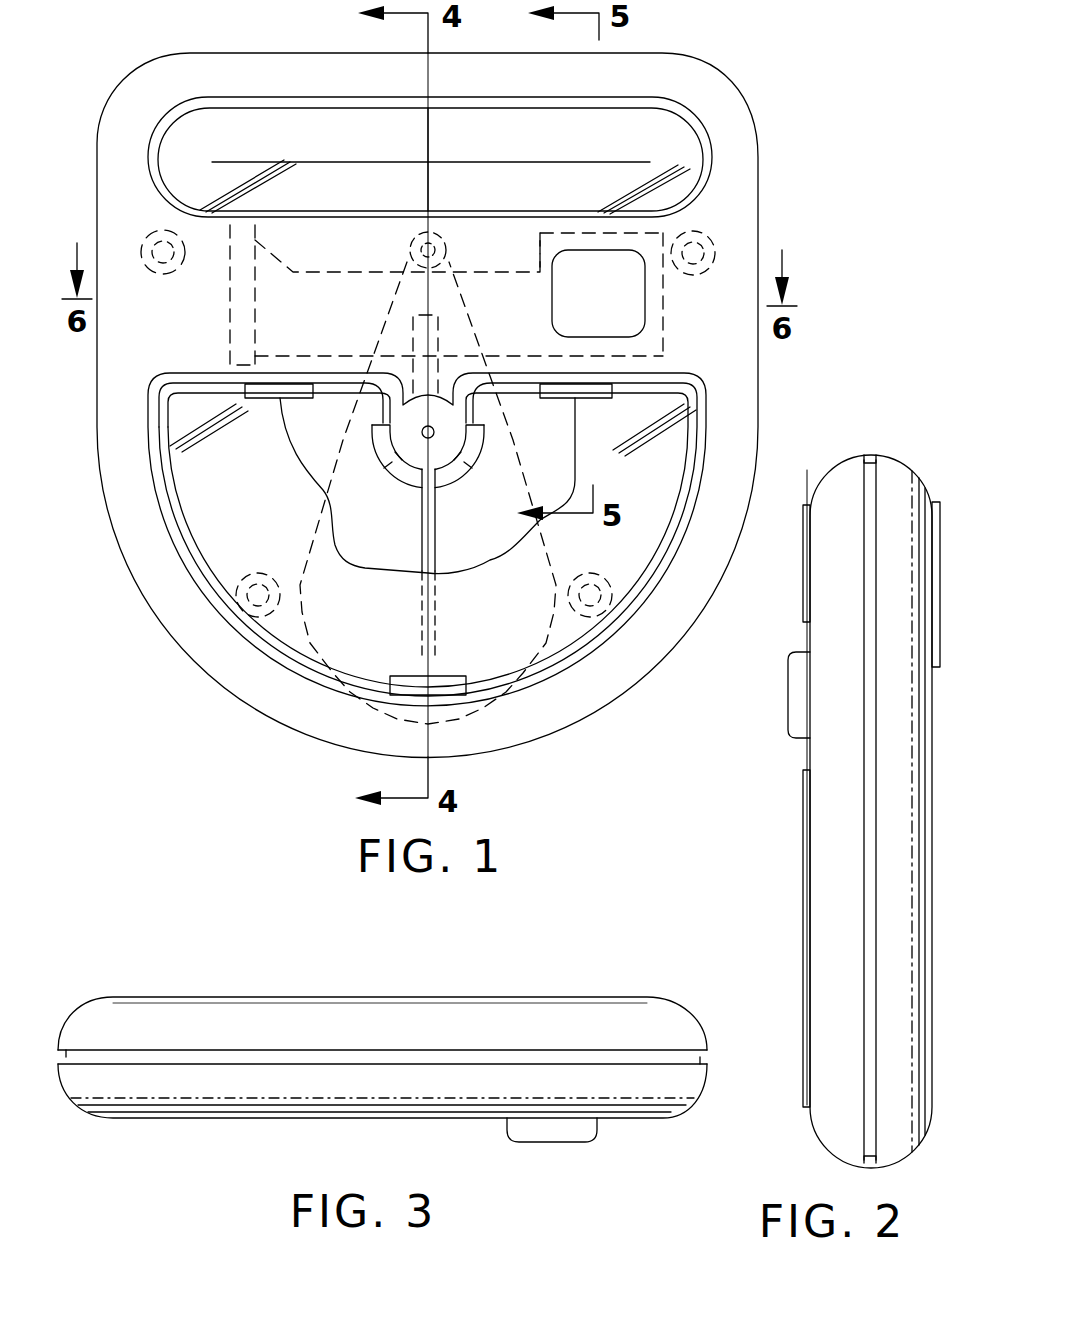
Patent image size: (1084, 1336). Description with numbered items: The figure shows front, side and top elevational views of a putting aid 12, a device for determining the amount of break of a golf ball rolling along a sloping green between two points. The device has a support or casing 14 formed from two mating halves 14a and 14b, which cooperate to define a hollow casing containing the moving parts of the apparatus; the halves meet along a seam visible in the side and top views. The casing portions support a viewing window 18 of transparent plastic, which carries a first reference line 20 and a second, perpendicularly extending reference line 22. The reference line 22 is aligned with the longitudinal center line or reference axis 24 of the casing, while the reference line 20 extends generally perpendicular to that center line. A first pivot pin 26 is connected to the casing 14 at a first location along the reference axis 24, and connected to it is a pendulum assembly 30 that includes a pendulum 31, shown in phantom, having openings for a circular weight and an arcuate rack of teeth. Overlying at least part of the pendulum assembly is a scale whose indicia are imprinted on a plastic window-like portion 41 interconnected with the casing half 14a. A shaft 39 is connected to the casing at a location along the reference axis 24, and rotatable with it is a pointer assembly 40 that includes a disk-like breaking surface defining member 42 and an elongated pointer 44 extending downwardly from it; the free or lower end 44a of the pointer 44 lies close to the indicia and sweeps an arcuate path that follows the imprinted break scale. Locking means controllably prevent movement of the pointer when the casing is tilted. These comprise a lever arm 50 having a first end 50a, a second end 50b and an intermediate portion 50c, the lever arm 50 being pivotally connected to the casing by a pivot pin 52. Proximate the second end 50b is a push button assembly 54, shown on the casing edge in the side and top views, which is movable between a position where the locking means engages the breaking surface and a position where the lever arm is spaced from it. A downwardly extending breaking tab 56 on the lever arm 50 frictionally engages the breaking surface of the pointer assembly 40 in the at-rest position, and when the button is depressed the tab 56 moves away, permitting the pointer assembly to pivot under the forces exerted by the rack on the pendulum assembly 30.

In FIG. 1, the putting aid 12 is at (748, 79).
In FIG. 2, the putting aid 12 is at (909, 450).
In FIG. 3, the putting aid 12 is at (478, 992).
In FIG. 1, the casing 14 is at (758, 129).
In FIG. 2, the casing 14 is at (792, 912).
In FIG. 3, the casing 14 is at (186, 990).
In FIG. 1, the casing half 14a is at (757, 158).
In FIG. 2, the casing half 14a is at (843, 457).
In FIG. 3, the casing half 14a is at (268, 1103).
In FIG. 2, the casing half 14b is at (911, 1138).
In FIG. 3, the casing half 14b is at (296, 1008).
In FIG. 1, the viewing window 18 is at (222, 120).
In FIG. 1, the first reference line 20 is at (565, 163).
In FIG. 1, the second reference line 22 is at (426, 144).
In FIG. 1, the reference axis 24 is at (442, 76).
In FIG. 1, the first pivot pin 26 is at (452, 214).
In FIG. 1, the pendulum assembly 30 is at (296, 543).
In FIG. 1, the pendulum 31 is at (395, 343).
In FIG. 1, the shaft 39 is at (440, 432).
In FIG. 1, the pointer assembly 40 is at (398, 470).
In FIG. 2, the window-like portion 41 is at (818, 1007).
In FIG. 1, the breaking surface defining member 42 is at (468, 470).
In FIG. 1, the pointer 44 is at (422, 546).
In FIG. 1, the free end of pointer 44a is at (440, 650).
In FIG. 1, the lever arm 50 is at (356, 258).
In FIG. 1, the first end of lever arm 50a is at (270, 297).
In FIG. 1, the second end of lever arm 50b is at (662, 319).
In FIG. 1, the intermediate portion of lever arm 50c is at (490, 282).
In FIG. 1, the pivot pin 52 is at (228, 326).
In FIG. 1, the push button assembly 54 is at (630, 322).
In FIG. 2, the push button assembly 54 is at (787, 720).
In FIG. 3, the push button assembly 54 is at (559, 1140).
In FIG. 1, the breaking tab 56 is at (400, 305).